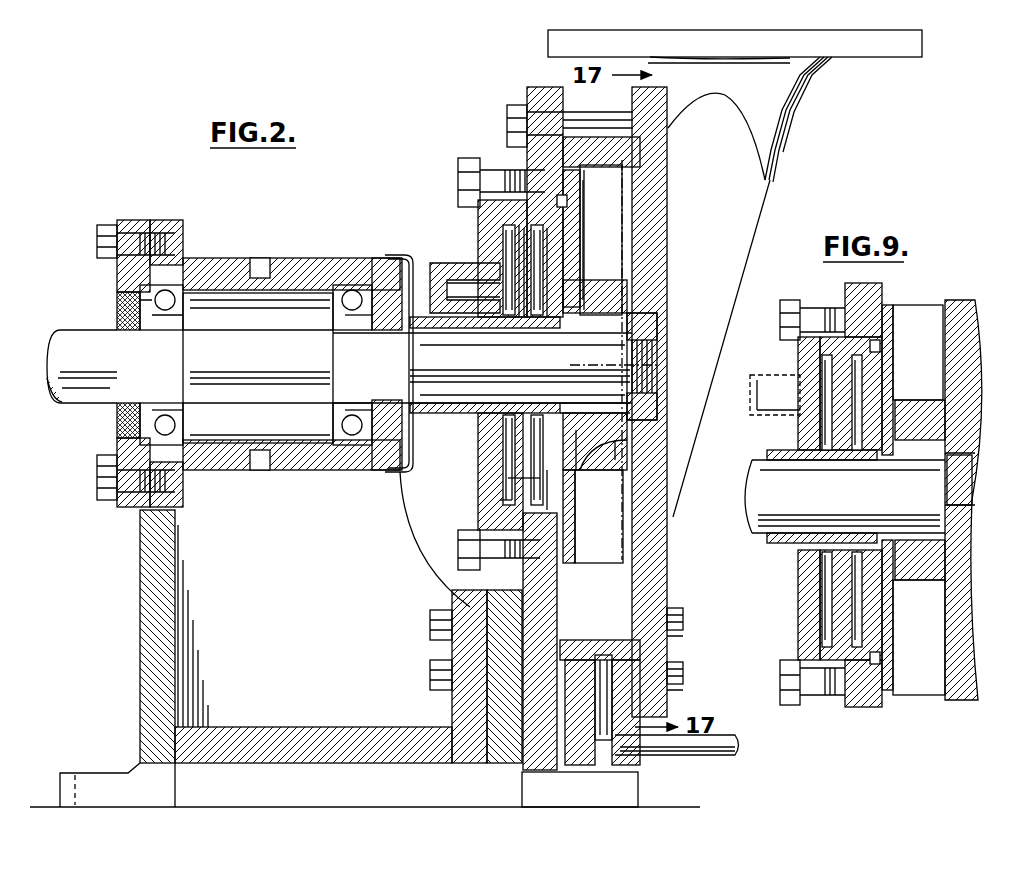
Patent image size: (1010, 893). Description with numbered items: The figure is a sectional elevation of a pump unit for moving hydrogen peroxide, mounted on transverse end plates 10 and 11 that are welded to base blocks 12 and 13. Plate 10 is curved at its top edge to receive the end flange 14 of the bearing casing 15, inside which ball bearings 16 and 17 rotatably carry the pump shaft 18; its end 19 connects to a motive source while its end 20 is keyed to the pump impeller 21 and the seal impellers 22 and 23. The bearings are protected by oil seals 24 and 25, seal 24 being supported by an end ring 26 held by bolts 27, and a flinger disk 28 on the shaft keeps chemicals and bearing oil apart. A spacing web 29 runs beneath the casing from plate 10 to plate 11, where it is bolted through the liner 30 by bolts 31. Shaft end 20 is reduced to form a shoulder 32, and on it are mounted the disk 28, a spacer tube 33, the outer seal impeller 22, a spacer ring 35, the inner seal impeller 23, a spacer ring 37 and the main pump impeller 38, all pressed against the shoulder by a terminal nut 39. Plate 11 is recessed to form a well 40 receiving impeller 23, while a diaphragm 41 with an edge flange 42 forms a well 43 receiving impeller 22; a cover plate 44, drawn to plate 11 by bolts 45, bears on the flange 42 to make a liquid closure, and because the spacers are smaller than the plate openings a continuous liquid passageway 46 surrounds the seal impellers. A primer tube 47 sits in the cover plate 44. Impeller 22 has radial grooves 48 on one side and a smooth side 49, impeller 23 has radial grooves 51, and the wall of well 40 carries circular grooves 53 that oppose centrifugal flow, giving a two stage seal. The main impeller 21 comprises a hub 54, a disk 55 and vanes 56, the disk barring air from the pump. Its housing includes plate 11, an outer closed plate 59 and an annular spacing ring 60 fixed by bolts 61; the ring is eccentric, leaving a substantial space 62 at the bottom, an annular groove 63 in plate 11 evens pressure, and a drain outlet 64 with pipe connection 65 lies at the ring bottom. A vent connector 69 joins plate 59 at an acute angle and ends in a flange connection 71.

In FIG. 2, the transverse end plate 10 is at (140, 637).
In FIG. 2, the transverse end plate 11 is at (558, 608).
In FIG. 9, the transverse end plate 11 is at (862, 707).
In FIG. 2, the base block 12 is at (75, 773).
In FIG. 2, the base block 13 is at (635, 793).
In FIG. 2, the end flange 14 is at (165, 222).
In FIG. 2, the bearing casing 15 is at (222, 258).
In FIG. 2, the ball bearing 16 is at (183, 426).
In FIG. 2, the ball bearing 17 is at (333, 428).
In FIG. 2, the pump shaft 18 is at (266, 360).
In FIG. 2, the shaft end 19 is at (73, 338).
In FIG. 2, the shaft end 20 is at (450, 408).
In FIG. 9, the shaft end 20 is at (838, 496).
In FIG. 2, the pump impeller 21 is at (648, 262).
In FIG. 2, the outer seal pump impeller 22 is at (507, 320).
In FIG. 9, the outer seal pump impeller 22 is at (826, 575).
In FIG. 2, the inner seal pump impeller 23 is at (543, 322).
In FIG. 9, the inner seal pump impeller 23 is at (856, 578).
In FIG. 2, the oil seal 24 is at (117, 418).
In FIG. 2, the oil seal 25 is at (366, 470).
In FIG. 2, the end ring 26 is at (117, 278).
In FIG. 2, the bolt 27 is at (104, 225).
In FIG. 2, the flinger disk 28 is at (408, 255).
In FIG. 2, the spacing web 29 is at (302, 644).
In FIG. 2, the liner 30 is at (495, 765).
In FIG. 2, the bolt 31 is at (430, 672).
In FIG. 2, the shoulder 32 is at (412, 358).
In FIG. 2, the spacer tube 33 is at (462, 328).
In FIG. 2, the spacer ring 35 is at (528, 328).
In FIG. 2, the spacer ring 37 is at (556, 328).
In FIG. 2, the main pump impeller 38 is at (606, 402).
In FIG. 2, the terminal nut 39 is at (660, 330).
In FIG. 2, the well 40 is at (575, 450).
In FIG. 2, the diaphragm 41 is at (548, 490).
In FIG. 2, the edge flange 42 is at (585, 285).
In FIG. 2, the well 43 is at (508, 462).
In FIG. 2, the cover plate 44 is at (478, 226).
In FIG. 9, the cover plate 44 is at (806, 660).
In FIG. 2, the bolt 45 is at (466, 160).
In FIG. 2, the liquid passageway 46 is at (522, 328).
In FIG. 2, the primer tube 47 is at (436, 263).
In FIG. 9, the primer tube 47 is at (758, 385).
In FIG. 2, the radial grooves 48 is at (500, 265).
In FIG. 2, the smooth side 49 is at (510, 465).
In FIG. 2, the radial grooves 51 is at (586, 250).
In FIG. 2, the circular grooves 53 is at (560, 465).
In FIG. 2, the hub 54 is at (618, 445).
In FIG. 2, the disk 55 is at (578, 232).
In FIG. 2, the vanes 56 is at (620, 262).
In FIG. 9, the vanes 56 is at (920, 310).
In FIG. 2, the outer closed plate 59 is at (668, 540).
In FIG. 9, the outer closed plate 59 is at (950, 620).
In FIG. 2, the annular spacing ring 60 is at (576, 640).
In FIG. 2, the bolt 61 is at (507, 118).
In FIG. 2, the space 62 is at (650, 584).
In FIG. 2, the annular groove 63 is at (567, 200).
In FIG. 9, the annular groove 63 is at (880, 346).
In FIG. 2, the drain outlet 64 is at (607, 660).
In FIG. 2, the pipe connection 65 is at (715, 757).
In FIG. 2, the vent connector 69 is at (757, 212).
In FIG. 2, the flange connection 71 is at (887, 60).